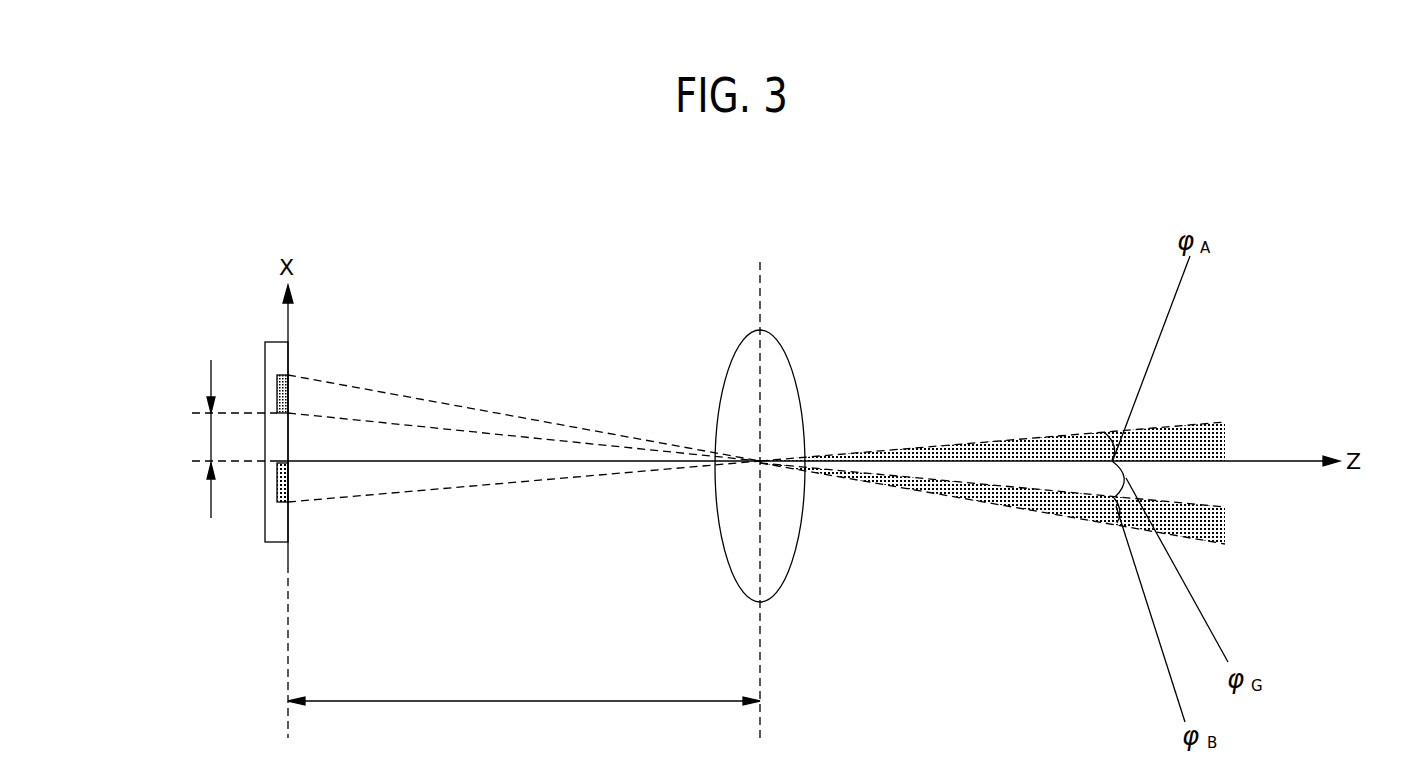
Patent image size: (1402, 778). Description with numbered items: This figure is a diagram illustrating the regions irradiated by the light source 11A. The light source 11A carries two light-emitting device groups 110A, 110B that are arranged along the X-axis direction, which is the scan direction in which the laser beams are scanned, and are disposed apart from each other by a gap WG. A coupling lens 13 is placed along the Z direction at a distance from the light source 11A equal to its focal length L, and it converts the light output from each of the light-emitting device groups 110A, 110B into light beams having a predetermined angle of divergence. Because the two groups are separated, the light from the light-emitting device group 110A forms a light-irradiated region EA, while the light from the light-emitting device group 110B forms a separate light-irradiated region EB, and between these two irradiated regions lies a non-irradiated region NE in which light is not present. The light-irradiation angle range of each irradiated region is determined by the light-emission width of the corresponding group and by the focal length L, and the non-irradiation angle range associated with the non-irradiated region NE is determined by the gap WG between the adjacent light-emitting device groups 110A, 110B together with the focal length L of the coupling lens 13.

The light source 11A is at (256, 310).
The light-emitting device group 110B is at (277, 378).
The light-emitting device group 110A is at (277, 497).
The coupling lens 13 is at (787, 352).
The gap between adjacent light-emitting device groups WG is at (211, 442).
The focal length of the coupling lens L is at (524, 691).
The light-irradiated region EA is at (1203, 422).
The light-irradiated region EB is at (1220, 528).
The non-irradiated region NE is at (1208, 486).